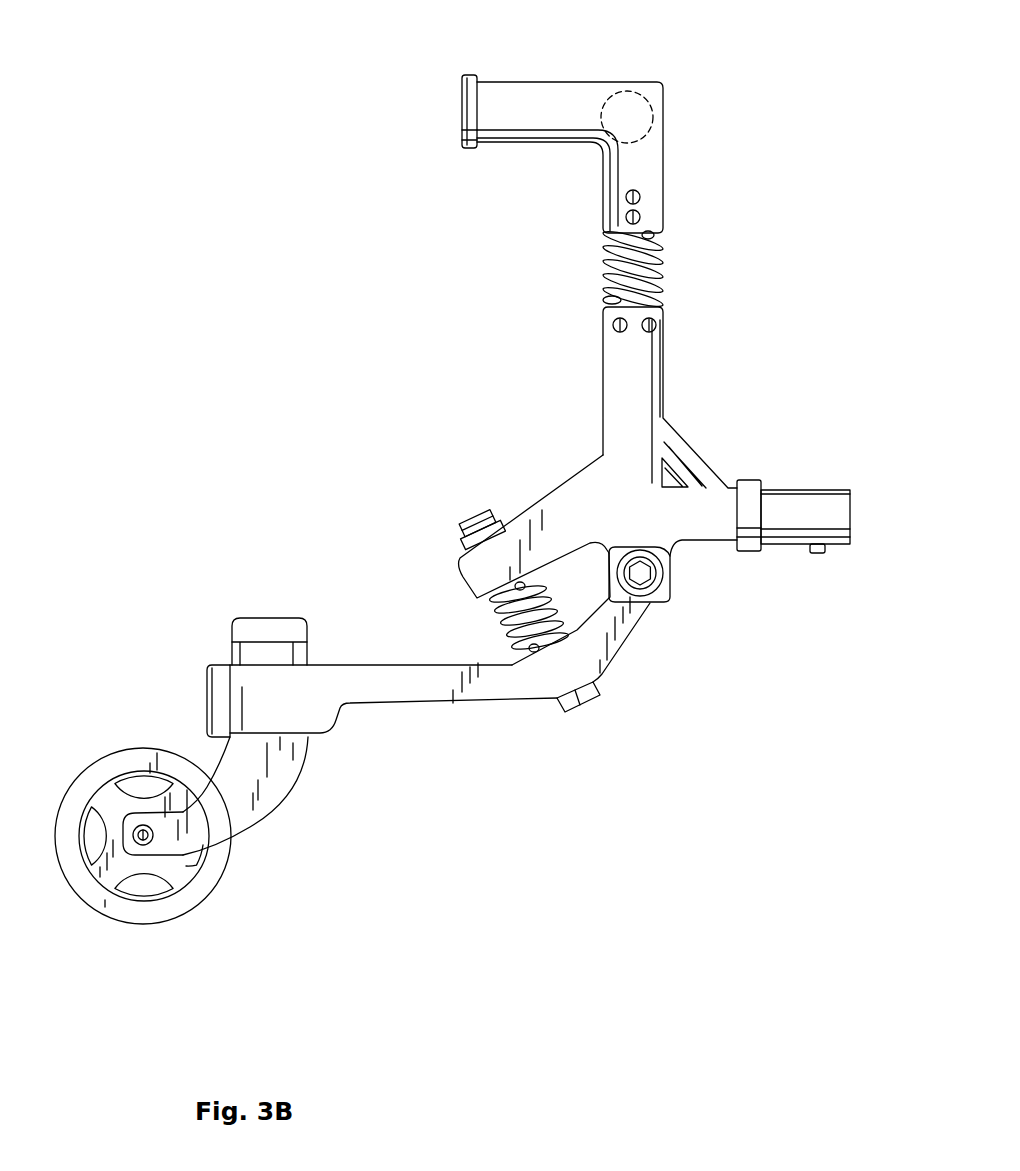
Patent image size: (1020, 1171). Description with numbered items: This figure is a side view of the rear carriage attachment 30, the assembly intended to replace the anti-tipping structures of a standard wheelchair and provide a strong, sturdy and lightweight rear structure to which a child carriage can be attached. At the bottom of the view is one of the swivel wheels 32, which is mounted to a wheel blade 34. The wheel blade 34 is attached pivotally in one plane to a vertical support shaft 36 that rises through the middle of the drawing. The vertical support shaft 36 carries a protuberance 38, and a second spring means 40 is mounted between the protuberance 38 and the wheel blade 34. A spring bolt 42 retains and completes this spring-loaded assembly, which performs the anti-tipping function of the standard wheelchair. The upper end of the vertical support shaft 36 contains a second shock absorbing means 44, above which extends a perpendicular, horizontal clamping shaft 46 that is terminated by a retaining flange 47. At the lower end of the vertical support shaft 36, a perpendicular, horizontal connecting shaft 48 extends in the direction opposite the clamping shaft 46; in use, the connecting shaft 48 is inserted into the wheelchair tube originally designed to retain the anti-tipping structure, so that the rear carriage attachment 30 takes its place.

The rear carriage attachment 30 is at (475, 489).
The swivel wheel 32 is at (130, 917).
The wheel blade 34 is at (365, 663).
The vertical support shaft 36 is at (603, 383).
The protuberance 38 is at (568, 497).
The second spring means 40 is at (507, 638).
The spring bolt 42 is at (597, 700).
The second shock absorbing means 44 is at (660, 268).
The clamping shaft 46 is at (560, 82).
The retaining flange 47 is at (462, 115).
The connecting shaft 48 is at (808, 490).